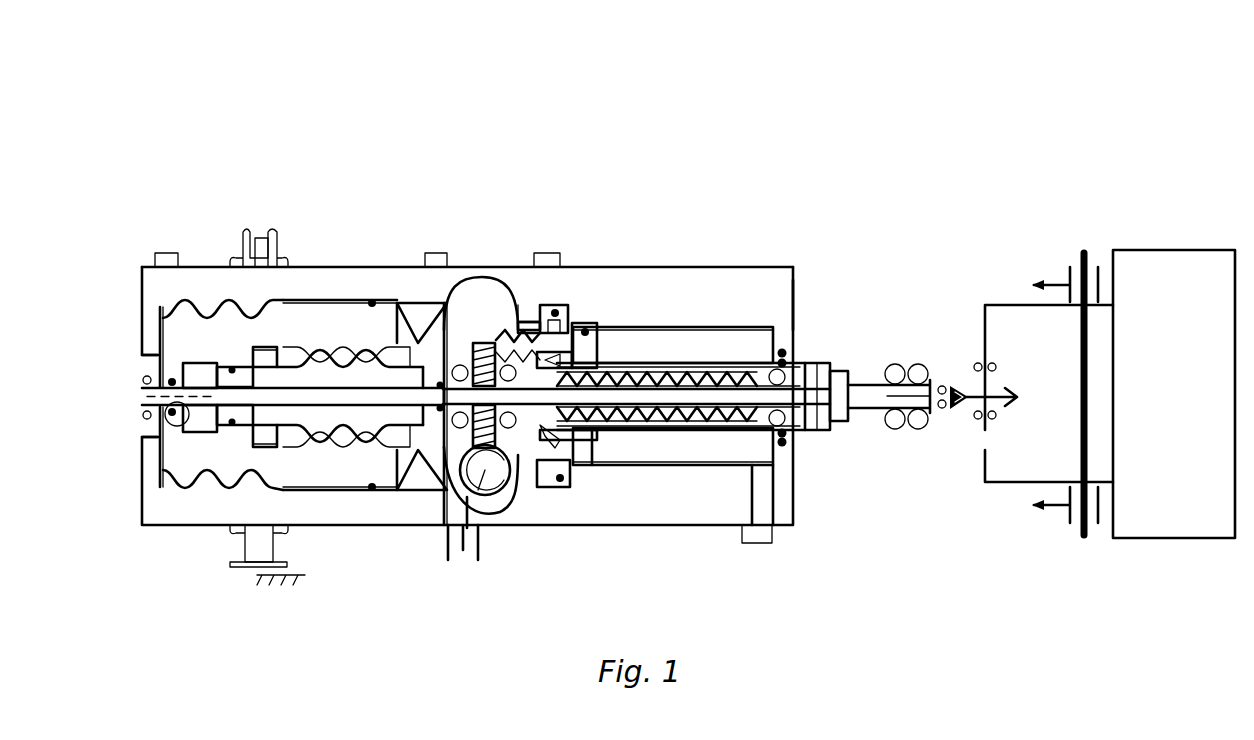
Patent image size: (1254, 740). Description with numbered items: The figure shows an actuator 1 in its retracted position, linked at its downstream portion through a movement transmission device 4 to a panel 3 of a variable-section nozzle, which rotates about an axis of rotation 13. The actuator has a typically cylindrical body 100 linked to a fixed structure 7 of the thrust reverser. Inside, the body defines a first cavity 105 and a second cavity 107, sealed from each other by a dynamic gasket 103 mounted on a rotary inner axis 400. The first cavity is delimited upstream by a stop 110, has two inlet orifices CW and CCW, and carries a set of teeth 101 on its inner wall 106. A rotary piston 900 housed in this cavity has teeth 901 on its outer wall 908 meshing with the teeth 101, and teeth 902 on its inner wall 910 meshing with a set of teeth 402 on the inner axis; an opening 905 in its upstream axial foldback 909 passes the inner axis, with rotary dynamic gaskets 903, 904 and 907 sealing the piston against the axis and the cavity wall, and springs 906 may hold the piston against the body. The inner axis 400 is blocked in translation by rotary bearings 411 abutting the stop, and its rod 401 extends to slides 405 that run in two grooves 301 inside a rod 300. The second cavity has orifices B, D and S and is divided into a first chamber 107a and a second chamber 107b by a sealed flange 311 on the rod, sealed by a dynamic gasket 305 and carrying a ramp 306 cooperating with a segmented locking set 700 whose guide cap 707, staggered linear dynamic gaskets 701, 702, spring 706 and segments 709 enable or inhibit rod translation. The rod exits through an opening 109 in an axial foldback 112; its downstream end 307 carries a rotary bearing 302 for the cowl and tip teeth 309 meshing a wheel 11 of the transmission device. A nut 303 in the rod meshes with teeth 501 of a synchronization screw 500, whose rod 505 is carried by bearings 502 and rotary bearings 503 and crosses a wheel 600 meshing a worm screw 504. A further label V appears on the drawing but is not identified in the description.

The actuator 1 is at (265, 117).
The body 100 is at (355, 262).
The set of teeth 101 is at (210, 365).
The dynamic gasket 103 is at (444, 500).
The first cavity 105 is at (447, 300).
The inner wall 106 is at (316, 352).
The second cavity 107 is at (449, 485).
The first chamber 107a is at (527, 445).
The second chamber 107b is at (665, 340).
The opening 109 is at (790, 373).
The stop 110 is at (158, 363).
The axial foldback 112 is at (793, 300).
The rod 300 is at (690, 340).
The grooves 301 is at (718, 372).
The rotary bearing 302 is at (910, 428).
The nut 303 is at (628, 340).
The dynamic gasket 305 is at (602, 372).
The ramp 306 is at (620, 366).
The downstream end 307 is at (888, 380).
The tip teeth 309 is at (940, 410).
The sealed flange 311 is at (592, 340).
The inner axis 400 is at (202, 420).
The rod 401 is at (780, 350).
The set of teeth 402 is at (373, 300).
The slides 405 is at (787, 440).
The rotary bearings 411 is at (146, 419).
The synchronization screw 500 is at (652, 467).
The set of teeth 501 is at (668, 470).
The set of bearings 502 is at (780, 426).
The set of rotary bearings 503 is at (460, 364).
The worm screw 504 is at (512, 430).
The rod 505 is at (652, 475).
The wheel 600 is at (482, 330).
The segmented locking set 700 is at (565, 305).
The linear dynamic gasket 701 is at (516, 320).
The linear dynamic gasket 702 is at (571, 320).
The spring 706 is at (511, 332).
The guide cap 707 is at (580, 310).
The segments 709 is at (535, 335).
The rotary piston 900 is at (385, 305).
The set of teeth 901 is at (298, 310).
The set of teeth 902 is at (330, 365).
The rotary dynamic gasket 903 is at (176, 426).
The rotary dynamic gasket 904 is at (230, 312).
The opening 905 is at (178, 430).
The springs 906 is at (417, 350).
The rotary dynamic gasket 907 is at (396, 347).
The outer wall 908 is at (305, 352).
The axial foldback 909 is at (170, 470).
The inner wall 910 is at (200, 307).
The panel 3 is at (1156, 245).
The movement transmission device 4 is at (954, 380).
The fixed structure 7 is at (275, 583).
The wheel 11 is at (960, 408).
The axis of rotation 13 is at (1083, 254).
The inlet orifice B is at (542, 246).
The inlet orifice CW is at (437, 246).
The inlet orifice CCW is at (153, 249).
The inlet orifice D is at (479, 506).
The inlet orifice S is at (768, 542).
The valve input V is at (134, 397).